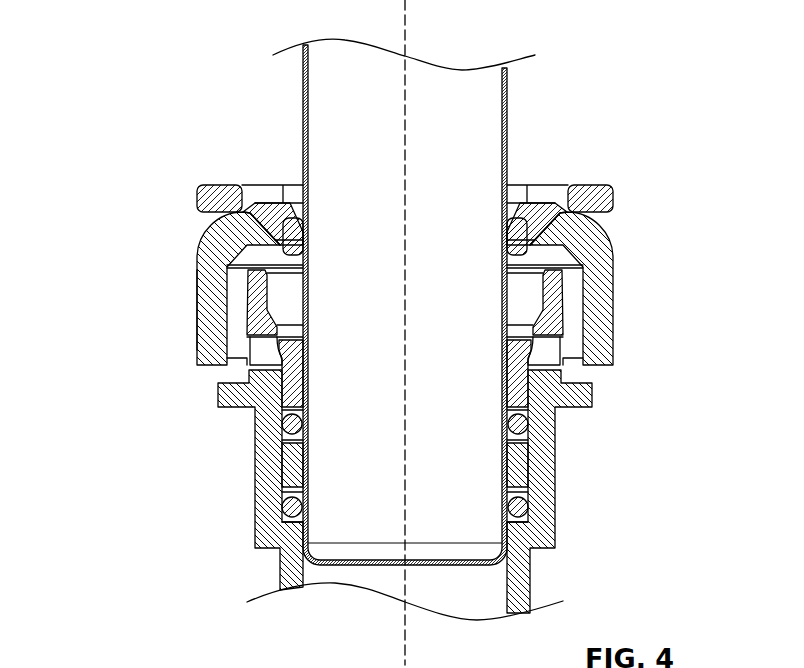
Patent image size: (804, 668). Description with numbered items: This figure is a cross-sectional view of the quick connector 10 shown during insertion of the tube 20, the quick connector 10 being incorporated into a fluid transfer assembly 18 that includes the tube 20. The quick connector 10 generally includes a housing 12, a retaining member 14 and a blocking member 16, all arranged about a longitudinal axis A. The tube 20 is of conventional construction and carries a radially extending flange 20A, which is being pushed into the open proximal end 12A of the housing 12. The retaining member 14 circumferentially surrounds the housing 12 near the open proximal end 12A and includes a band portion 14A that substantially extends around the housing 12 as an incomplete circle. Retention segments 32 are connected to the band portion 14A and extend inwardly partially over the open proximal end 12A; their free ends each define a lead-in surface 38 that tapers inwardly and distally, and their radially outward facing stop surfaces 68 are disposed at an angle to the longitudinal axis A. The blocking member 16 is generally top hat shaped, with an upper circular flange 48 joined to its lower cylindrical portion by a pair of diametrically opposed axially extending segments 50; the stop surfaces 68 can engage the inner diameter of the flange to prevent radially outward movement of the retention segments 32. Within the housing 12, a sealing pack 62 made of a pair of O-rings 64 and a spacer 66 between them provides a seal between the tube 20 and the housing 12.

The quick connector 10 is at (392, 480).
The housing 12 is at (558, 503).
The open proximal end 12A is at (563, 302).
The retaining member 14 is at (402, 288).
The band portion 14A is at (197, 287).
The blocking member 16 is at (434, 167).
The fluid transfer assembly 18 is at (131, 44).
The tube 20 is at (303, 100).
The flange 20A is at (252, 240).
The retention segments 32 is at (262, 218).
The lead-in surface 38 is at (282, 213).
The upper circular flange 48 is at (520, 378).
The axially extending segments 50 is at (205, 185).
The sealing pack 62 is at (535, 468).
The O-rings 64 is at (290, 423).
The spacer 66 is at (290, 465).
The stop surfaces 68 is at (250, 213).
The longitudinal axis A is at (405, 8).